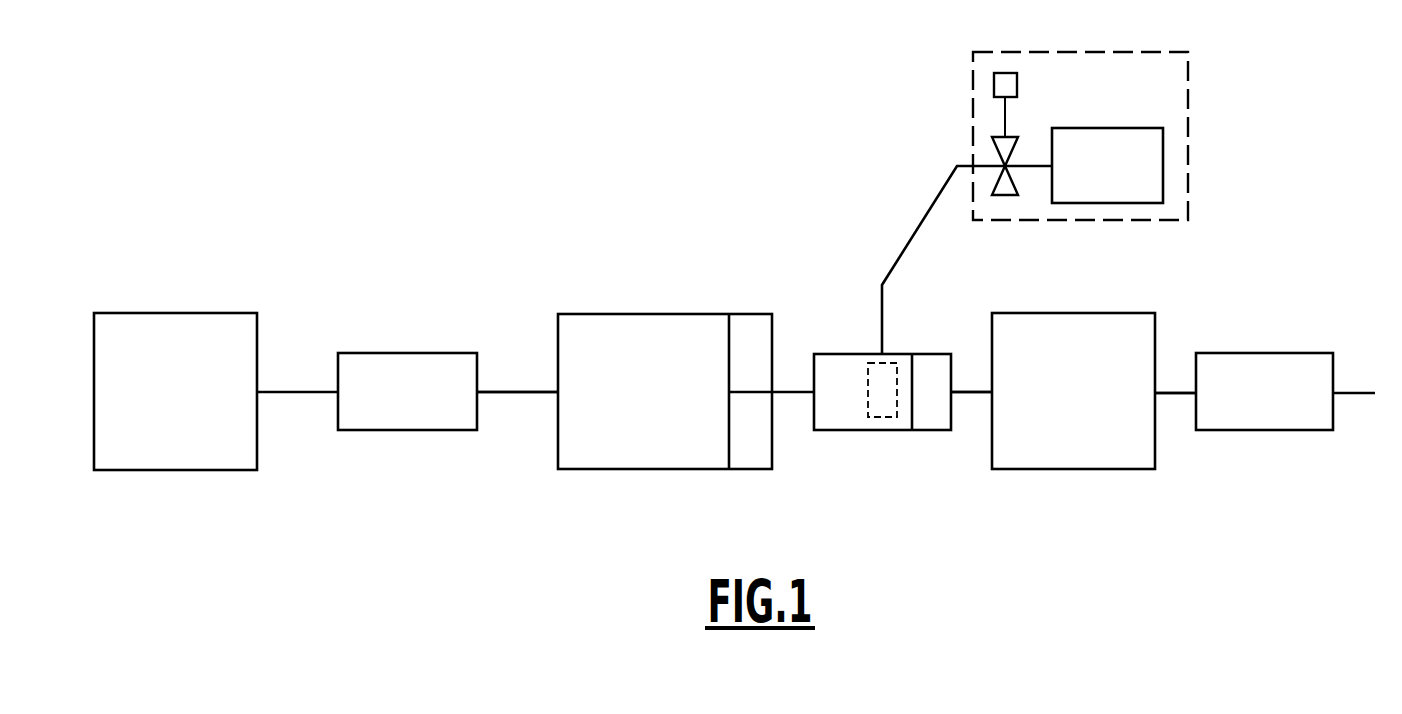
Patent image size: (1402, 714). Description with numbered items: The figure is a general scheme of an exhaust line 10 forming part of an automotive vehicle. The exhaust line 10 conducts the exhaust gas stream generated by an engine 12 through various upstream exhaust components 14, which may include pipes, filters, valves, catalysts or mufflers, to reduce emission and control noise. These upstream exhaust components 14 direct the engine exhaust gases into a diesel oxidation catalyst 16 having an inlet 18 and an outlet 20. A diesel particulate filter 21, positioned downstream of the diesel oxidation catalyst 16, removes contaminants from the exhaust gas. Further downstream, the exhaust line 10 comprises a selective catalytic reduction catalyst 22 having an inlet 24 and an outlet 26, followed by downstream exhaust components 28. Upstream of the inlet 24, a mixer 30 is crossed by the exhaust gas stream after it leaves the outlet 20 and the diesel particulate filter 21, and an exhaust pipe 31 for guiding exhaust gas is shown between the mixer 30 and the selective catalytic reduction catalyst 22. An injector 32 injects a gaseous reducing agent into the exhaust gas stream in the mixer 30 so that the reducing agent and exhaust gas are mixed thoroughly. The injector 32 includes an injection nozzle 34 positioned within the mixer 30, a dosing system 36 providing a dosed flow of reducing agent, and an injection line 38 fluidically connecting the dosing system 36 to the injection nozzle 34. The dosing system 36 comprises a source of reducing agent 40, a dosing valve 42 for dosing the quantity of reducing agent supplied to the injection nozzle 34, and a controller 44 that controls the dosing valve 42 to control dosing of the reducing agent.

The exhaust line 10 is at (619, 112).
The engine 12 is at (176, 313).
The upstream exhaust components 14 is at (408, 353).
The diesel oxidation catalyst 16 is at (635, 314).
The inlet 18 is at (557, 392).
The outlet 20 is at (729, 393).
The diesel particulate filter 21 is at (748, 322).
The selective catalytic reduction catalyst 22 is at (1080, 460).
The inlet 24 is at (992, 393).
The outlet 26 is at (1156, 393).
The downstream exhaust components 28 is at (1273, 412).
The mixer 30 is at (838, 431).
The exhaust pipe 31 is at (937, 413).
The injector 32 is at (861, 147).
The injection nozzle 34 is at (880, 410).
The dosing system 36 is at (1188, 108).
The injection line 38 is at (898, 260).
The source of reducing agent 40 is at (1105, 182).
The dosing valve 42 is at (1003, 197).
The controller 44 is at (994, 80).